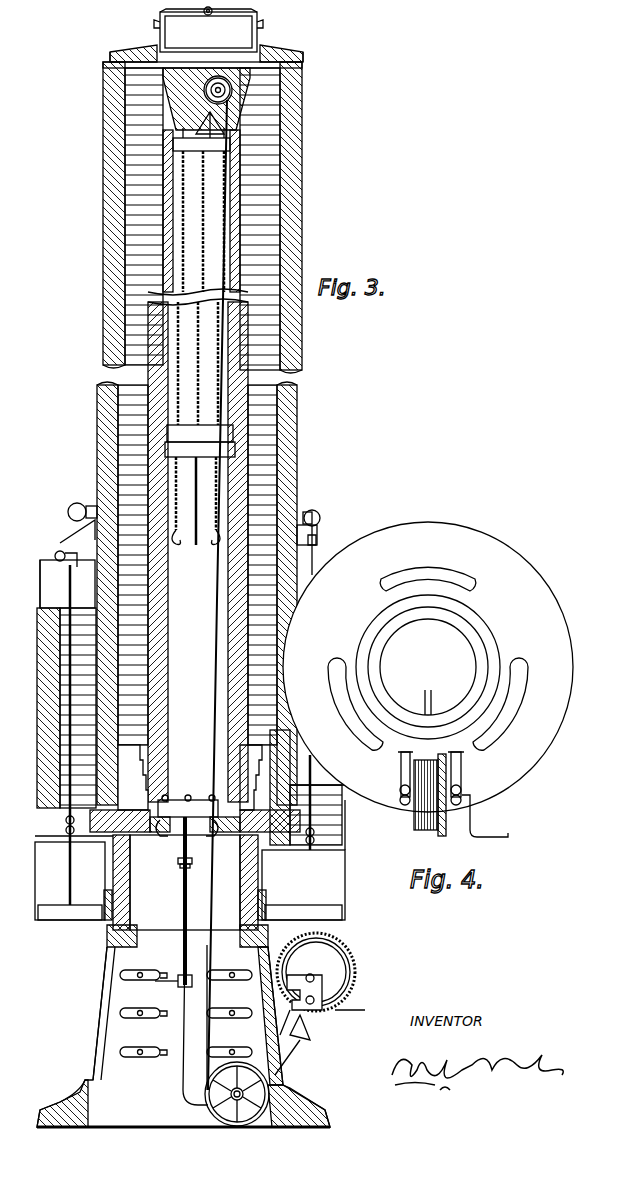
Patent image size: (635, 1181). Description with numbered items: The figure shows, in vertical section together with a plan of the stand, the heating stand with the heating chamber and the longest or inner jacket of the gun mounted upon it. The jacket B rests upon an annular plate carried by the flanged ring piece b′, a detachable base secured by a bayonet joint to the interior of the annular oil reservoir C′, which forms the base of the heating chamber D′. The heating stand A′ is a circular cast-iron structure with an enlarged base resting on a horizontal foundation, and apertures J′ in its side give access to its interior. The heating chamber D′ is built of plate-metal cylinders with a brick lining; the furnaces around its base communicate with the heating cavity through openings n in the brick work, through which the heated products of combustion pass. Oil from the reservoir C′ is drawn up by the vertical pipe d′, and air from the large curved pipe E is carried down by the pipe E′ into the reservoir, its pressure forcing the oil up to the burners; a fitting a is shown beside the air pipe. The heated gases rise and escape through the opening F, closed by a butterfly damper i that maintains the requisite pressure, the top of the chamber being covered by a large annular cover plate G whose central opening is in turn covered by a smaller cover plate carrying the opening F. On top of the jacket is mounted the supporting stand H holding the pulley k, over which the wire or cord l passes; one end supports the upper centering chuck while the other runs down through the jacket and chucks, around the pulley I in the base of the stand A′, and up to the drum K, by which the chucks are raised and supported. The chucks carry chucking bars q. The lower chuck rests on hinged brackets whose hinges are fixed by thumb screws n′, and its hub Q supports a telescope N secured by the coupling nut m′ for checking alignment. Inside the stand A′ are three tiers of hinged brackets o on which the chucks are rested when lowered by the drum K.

In FIG. 3, the opening F is at (208, 30).
In FIG. 3, the butterfly damper i is at (213, 10).
In FIG. 3, the lugs j′ is at (156, 22).
In FIG. 3, the annular cover plate G is at (206, 47).
In FIG. 3, the heating chamber D′ is at (154, 469).
In FIG. 3, the jacket B is at (195, 552).
In FIG. 3, the supporting stand H is at (206, 99).
In FIG. 3, the pulley k is at (218, 92).
In FIG. 3, the chucking bar q is at (173, 145).
In FIG. 3, the wire or cord l is at (214, 655).
In FIG. 3, the curved air pipe E is at (68, 512).
In FIG. 3, the air pipe E′ is at (318, 676).
In FIG. 3, the pipe fitting a is at (54, 556).
In FIG. 3, the vertical oil pipe d′ is at (75, 735).
In FIG. 3, the opening n is at (188, 777).
In FIG. 3, the thumb screw n′ is at (152, 838).
In FIG. 3, the hub Q is at (183, 856).
In FIG. 3, the telescope N is at (183, 882).
In FIG. 3, the coupling nut m′ is at (191, 866).
In FIG. 3, the flanged ring piece b′ is at (112, 895).
In FIG. 3, the annular oil reservoir C′ is at (190, 878).
In FIG. 3, the heating stand A′ is at (183, 1037).
In FIG. 4, the heating stand A′ is at (428, 667).
In FIG. 3, the opening J′ is at (146, 1025).
In FIG. 4, the opening J′ is at (428, 658).
In FIG. 3, the hinged bracket o is at (186, 1006).
In FIG. 3, the pulley wheel I is at (210, 1106).
In FIG. 4, the pulley wheel I is at (432, 700).
In FIG. 3, the drum K is at (320, 1004).
In FIG. 4, the drum K is at (453, 788).